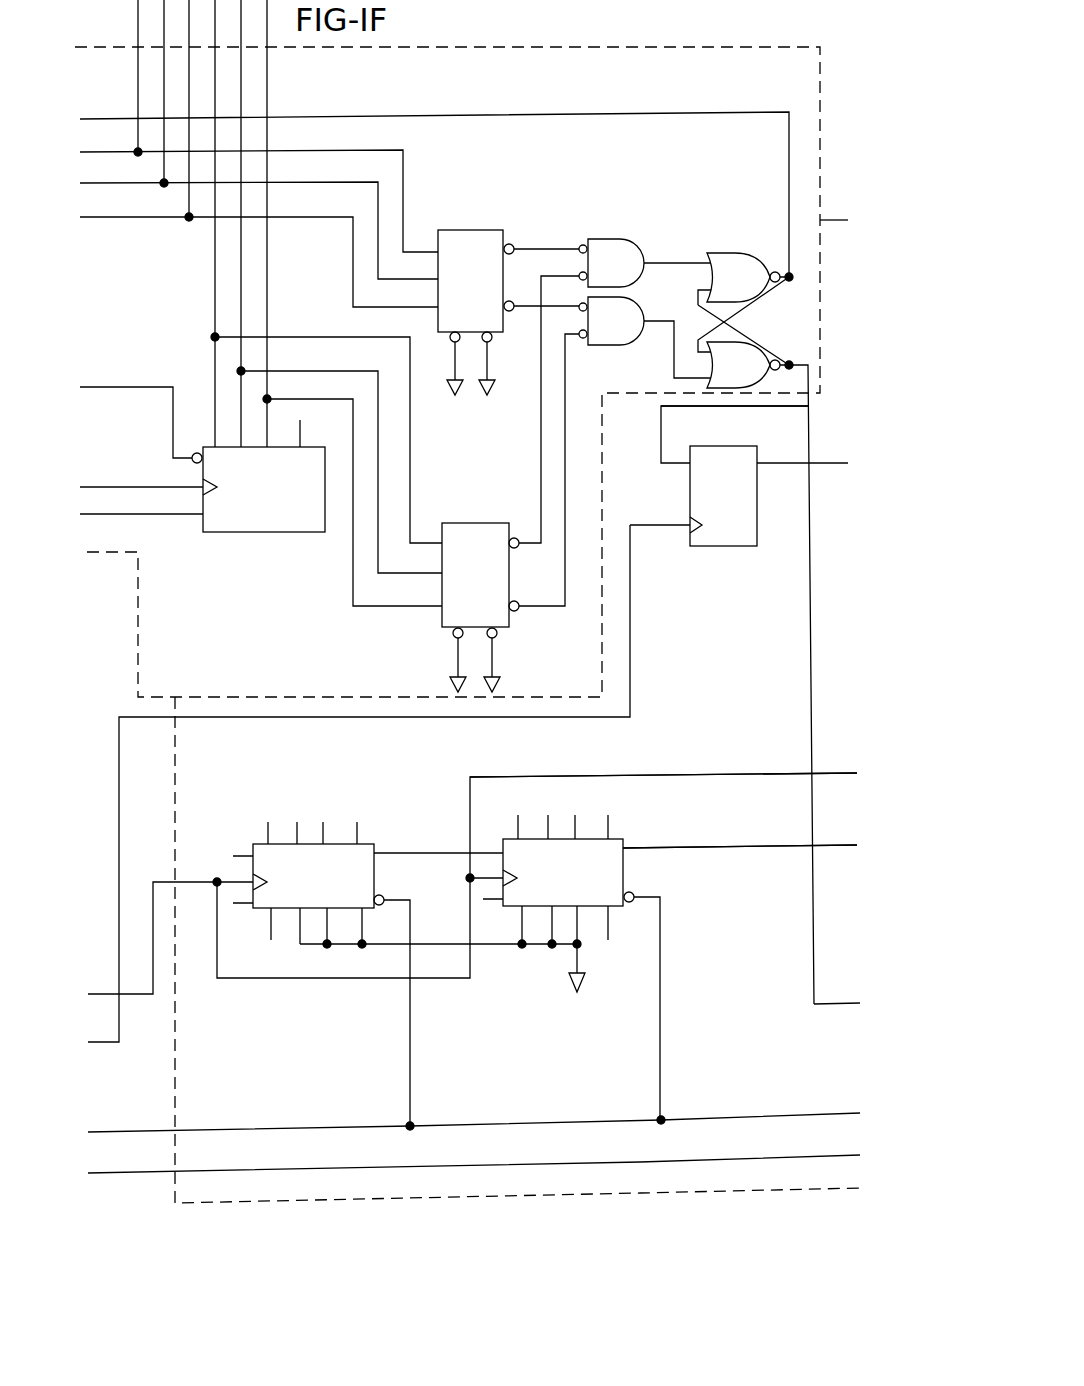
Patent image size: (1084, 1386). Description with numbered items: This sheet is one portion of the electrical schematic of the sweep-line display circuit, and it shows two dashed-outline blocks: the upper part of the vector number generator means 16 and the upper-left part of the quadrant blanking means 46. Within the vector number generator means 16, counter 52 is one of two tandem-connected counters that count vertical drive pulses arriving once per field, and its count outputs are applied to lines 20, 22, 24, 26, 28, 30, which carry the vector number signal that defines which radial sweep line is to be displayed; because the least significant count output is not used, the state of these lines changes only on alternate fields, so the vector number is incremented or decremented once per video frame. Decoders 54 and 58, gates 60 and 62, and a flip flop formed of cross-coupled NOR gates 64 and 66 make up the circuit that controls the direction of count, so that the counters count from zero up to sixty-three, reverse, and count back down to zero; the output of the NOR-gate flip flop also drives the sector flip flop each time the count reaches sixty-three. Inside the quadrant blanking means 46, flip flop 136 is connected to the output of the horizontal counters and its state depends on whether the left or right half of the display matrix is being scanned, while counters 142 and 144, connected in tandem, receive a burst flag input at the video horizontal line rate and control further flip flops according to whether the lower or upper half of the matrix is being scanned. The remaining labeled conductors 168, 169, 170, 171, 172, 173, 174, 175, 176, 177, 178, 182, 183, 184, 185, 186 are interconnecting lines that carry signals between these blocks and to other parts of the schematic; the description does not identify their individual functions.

The vector number generator means 16 is at (545, 46).
The line 20 is at (138, 84).
The line 22 is at (164, 66).
The line 24 is at (189, 40).
The line 26 is at (212, 25).
The line 28 is at (241, 93).
The line 30 is at (267, 66).
The quadrant blanking means 46 is at (836, 220).
The counter 52 is at (253, 532).
The decoder 54 is at (488, 230).
The decoder 58 is at (478, 523).
The gate 60 is at (630, 239).
The gate 62 is at (612, 345).
The NOR gate 64 is at (748, 253).
The NOR gate 66 is at (710, 381).
The flip flop 136 is at (710, 546).
The counter 142 is at (256, 844).
The counter 144 is at (514, 839).
The line 168 is at (110, 1175).
The line 169 is at (124, 118).
The line 170 is at (126, 152).
The line 171 is at (126, 183).
The line 172 is at (130, 217).
The line 173 is at (128, 388).
The line 174 is at (128, 488).
The line 175 is at (130, 518).
The line 176 is at (100, 994).
The line 177 is at (119, 1030).
The line 178 is at (130, 1132).
The line 182 is at (828, 1004).
The line 183 is at (766, 846).
The line 184 is at (784, 776).
The line 185 is at (836, 462).
The line 186 is at (748, 408).